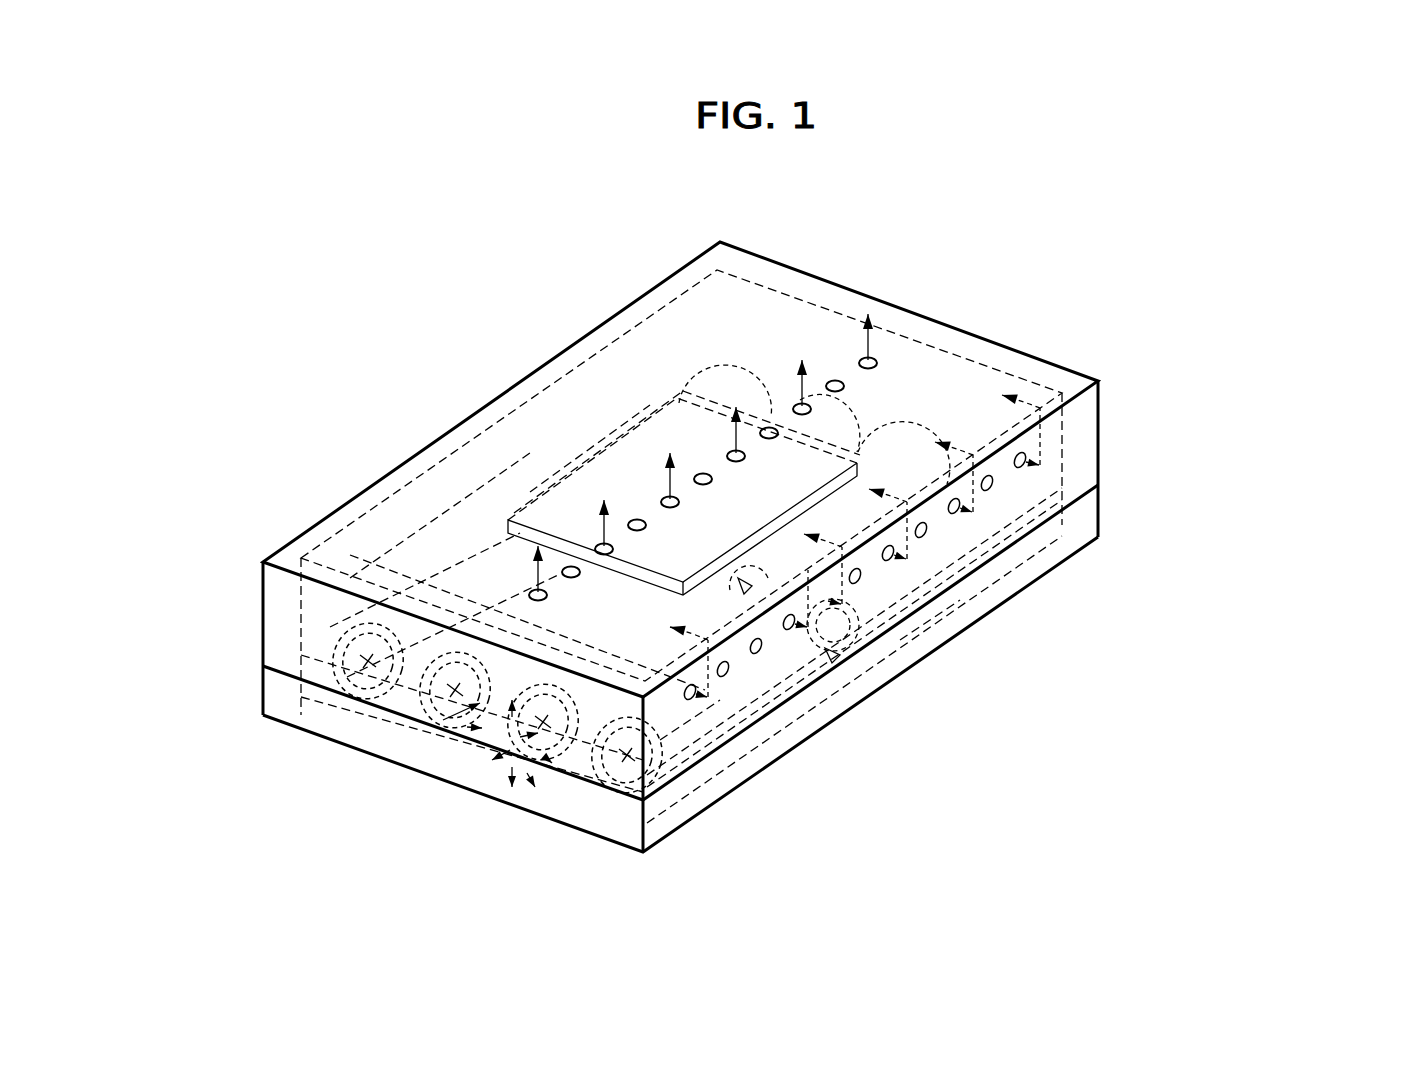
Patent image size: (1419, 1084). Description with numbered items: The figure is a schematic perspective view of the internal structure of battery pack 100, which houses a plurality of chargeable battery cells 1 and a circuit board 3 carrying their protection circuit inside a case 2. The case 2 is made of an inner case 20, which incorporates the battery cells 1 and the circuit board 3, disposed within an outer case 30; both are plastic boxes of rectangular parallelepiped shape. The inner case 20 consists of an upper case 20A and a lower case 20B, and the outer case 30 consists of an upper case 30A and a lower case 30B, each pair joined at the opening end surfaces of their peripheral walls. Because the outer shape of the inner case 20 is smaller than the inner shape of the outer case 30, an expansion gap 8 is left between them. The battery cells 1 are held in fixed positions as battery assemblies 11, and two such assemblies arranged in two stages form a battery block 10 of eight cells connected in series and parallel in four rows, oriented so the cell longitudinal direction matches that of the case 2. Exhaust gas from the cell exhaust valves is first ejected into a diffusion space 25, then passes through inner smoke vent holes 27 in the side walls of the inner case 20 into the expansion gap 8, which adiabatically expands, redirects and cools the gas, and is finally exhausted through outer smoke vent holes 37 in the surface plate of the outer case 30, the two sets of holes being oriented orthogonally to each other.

The battery pack 100 is at (411, 288).
The case 2 is at (1295, 347).
The outer case 30 is at (1228, 267).
The upper case 30A is at (997, 310).
The lower case 30B is at (1123, 512).
The inner case 20 is at (1228, 548).
The upper case 20A is at (1063, 456).
The lower case 20B is at (981, 590).
The expansion gap 8 is at (286, 556).
The circuit board 3 is at (642, 420).
The outer smoke vent holes 37 is at (668, 498).
The inner smoke vent holes 27 is at (1032, 428).
The battery cells 1 is at (350, 665).
The diffusion space 25 is at (485, 685).
The battery assemblies 11 is at (936, 614).
The battery block 10 is at (1037, 740).